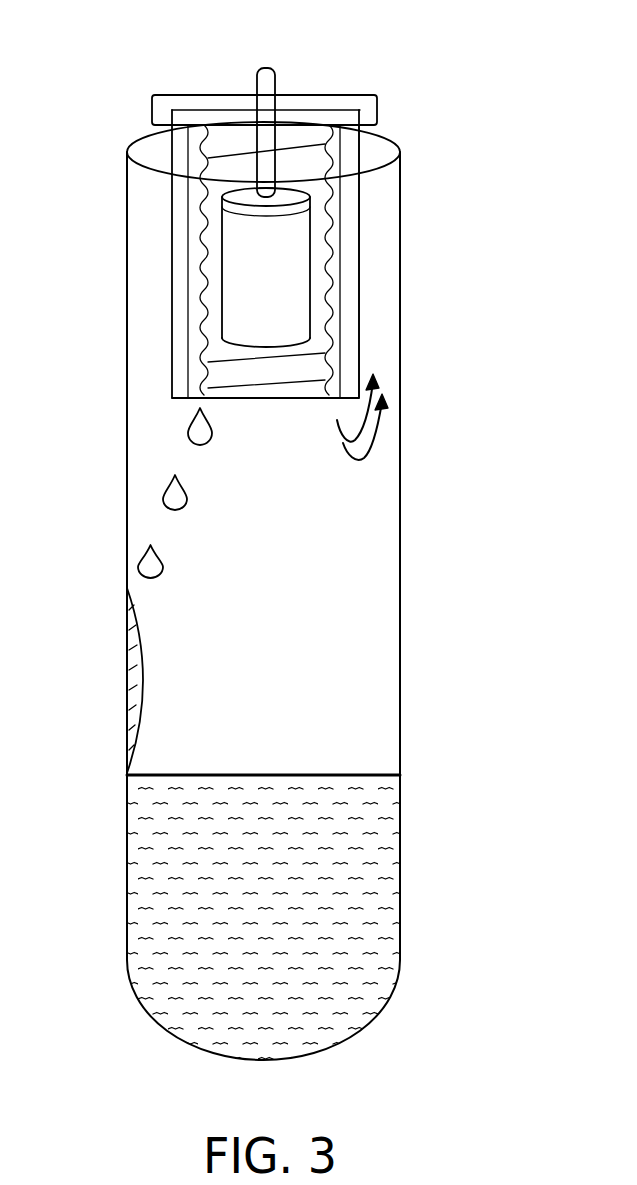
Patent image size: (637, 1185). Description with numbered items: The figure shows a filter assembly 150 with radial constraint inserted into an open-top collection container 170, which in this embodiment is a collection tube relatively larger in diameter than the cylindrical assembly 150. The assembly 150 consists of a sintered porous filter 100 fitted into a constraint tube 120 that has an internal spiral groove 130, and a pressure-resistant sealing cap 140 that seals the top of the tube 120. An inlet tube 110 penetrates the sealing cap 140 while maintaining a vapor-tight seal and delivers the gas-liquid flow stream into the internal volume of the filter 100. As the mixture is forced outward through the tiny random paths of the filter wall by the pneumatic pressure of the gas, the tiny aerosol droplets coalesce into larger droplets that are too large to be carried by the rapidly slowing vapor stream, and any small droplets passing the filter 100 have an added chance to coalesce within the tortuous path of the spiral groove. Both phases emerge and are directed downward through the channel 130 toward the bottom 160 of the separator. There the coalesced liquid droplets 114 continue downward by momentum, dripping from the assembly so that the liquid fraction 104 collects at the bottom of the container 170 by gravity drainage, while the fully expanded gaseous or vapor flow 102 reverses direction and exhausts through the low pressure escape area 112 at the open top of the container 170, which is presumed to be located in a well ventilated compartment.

The filter 100 is at (300, 307).
The gaseous or vapor flow 102 is at (373, 458).
The liquid fraction 104 is at (400, 853).
The inlet tube 110 is at (266, 66).
The low pressure escape area 112 is at (383, 146).
The coalesced liquid droplets 114 is at (143, 563).
The tube 120 is at (178, 353).
The internal spiral groove 130 is at (203, 272).
The pressure-resistant sealing cap 140 is at (377, 96).
The filter assembly 150 is at (358, 320).
The bottom of the separator 160 is at (187, 400).
The open-top collection container 170 is at (123, 507).